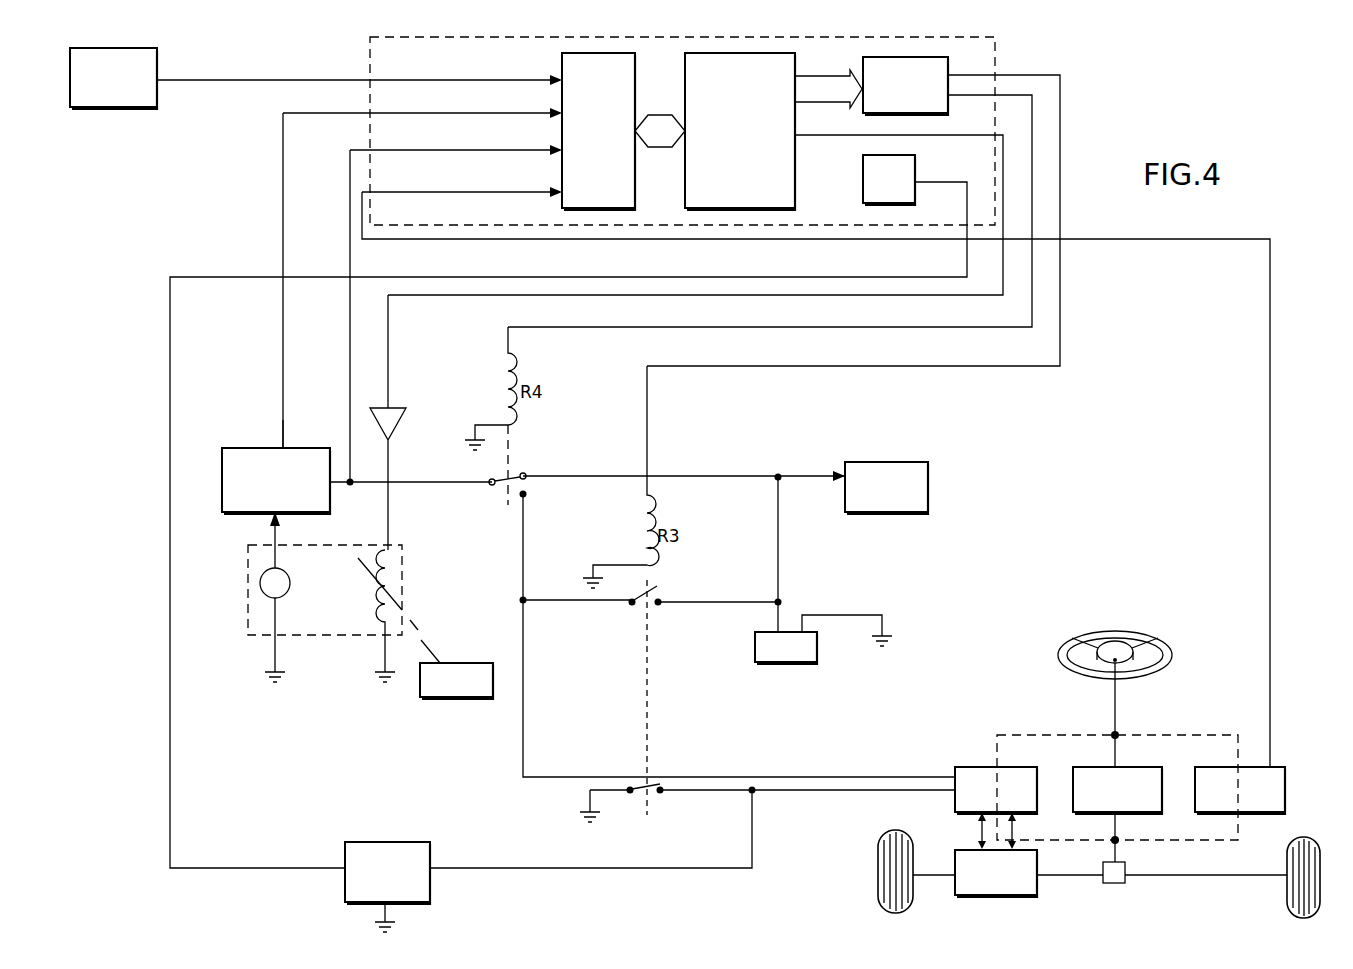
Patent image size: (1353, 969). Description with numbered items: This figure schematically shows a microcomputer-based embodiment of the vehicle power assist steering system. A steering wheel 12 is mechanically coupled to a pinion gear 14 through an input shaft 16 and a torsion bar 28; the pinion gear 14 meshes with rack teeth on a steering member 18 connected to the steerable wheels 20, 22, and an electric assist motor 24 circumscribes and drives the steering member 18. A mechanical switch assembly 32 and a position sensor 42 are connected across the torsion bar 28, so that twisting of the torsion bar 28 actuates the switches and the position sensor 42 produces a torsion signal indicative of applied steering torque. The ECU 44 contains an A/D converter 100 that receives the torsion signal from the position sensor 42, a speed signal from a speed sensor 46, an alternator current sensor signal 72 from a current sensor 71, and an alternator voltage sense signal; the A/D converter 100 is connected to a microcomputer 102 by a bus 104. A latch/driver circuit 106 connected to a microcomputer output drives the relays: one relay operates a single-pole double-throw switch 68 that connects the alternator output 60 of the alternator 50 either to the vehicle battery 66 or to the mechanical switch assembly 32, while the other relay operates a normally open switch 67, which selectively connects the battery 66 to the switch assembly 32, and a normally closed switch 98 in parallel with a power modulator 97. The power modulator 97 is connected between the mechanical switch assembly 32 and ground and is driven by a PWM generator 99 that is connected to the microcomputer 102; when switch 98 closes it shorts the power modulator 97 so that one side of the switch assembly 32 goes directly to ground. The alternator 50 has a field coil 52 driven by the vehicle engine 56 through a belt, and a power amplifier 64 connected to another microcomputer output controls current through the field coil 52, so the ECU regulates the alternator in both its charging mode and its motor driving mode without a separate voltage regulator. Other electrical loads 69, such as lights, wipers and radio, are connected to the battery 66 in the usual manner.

The speed sensor 46 is at (104, 109).
The ECU 44 is at (996, 40).
The A/D converter 100 is at (586, 183).
The microcomputer 102 is at (728, 183).
The bus 104 is at (657, 135).
The latch/driver circuit 106 is at (866, 63).
The PWM generator 99 is at (916, 156).
The current sensor 71 is at (244, 447).
The alternator current sensor signal 72 is at (284, 432).
The output of the alternator 60 is at (273, 541).
The alternator 50 is at (247, 618).
The power amplifier 64 is at (404, 424).
The field coil 52 is at (394, 576).
The vehicle engine 56 is at (466, 663).
The switch 68 is at (508, 501).
The other electrical loads 69 is at (927, 504).
The switch 67 is at (655, 598).
The vehicle battery 66 is at (795, 662).
The power modulator 97 is at (365, 841).
The switch 98 is at (652, 792).
The steering wheel 12 is at (1172, 652).
The input shaft 16 is at (1116, 705).
The mechanical switch assembly 32 is at (972, 766).
The torsion bar 28 is at (1130, 767).
The position sensor 42 is at (1285, 767).
The electric assist motor 24 is at (980, 895).
The pinion gear 14 is at (1115, 883).
The steering member 18 is at (1195, 875).
The steerable wheel 20 is at (890, 895).
The steerable wheel 22 is at (1316, 903).